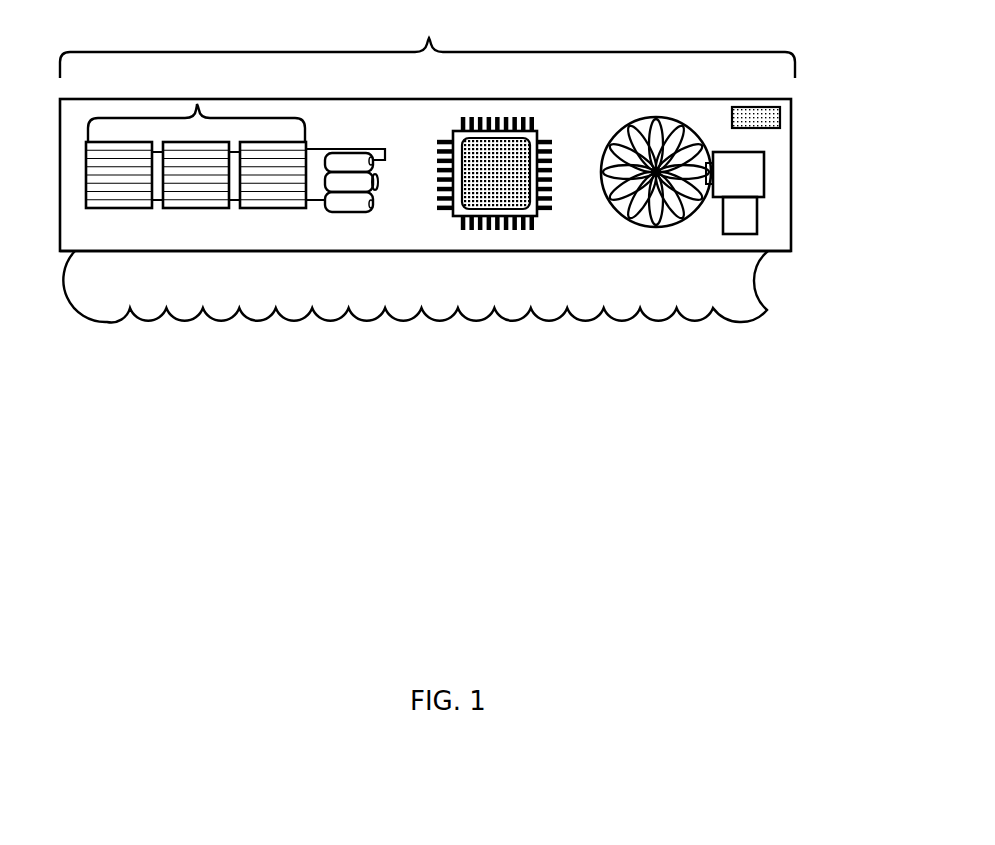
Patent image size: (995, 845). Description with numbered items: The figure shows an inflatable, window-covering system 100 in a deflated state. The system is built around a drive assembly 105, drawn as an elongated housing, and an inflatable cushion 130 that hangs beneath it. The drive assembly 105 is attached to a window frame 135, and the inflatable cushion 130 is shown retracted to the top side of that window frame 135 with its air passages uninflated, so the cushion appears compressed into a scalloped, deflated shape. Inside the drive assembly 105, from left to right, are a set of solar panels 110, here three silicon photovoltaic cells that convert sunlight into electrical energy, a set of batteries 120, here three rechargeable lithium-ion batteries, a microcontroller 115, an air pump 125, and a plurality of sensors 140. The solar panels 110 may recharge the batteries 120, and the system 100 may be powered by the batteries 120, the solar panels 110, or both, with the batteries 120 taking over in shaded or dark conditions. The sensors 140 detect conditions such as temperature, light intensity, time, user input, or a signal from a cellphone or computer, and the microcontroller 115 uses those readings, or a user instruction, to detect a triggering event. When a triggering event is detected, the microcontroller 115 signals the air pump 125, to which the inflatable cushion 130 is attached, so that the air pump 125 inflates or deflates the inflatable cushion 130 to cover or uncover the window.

The inflatable, window-covering system 100 is at (464, 344).
The drive assembly 105 is at (427, 130).
The set of solar panels 110 is at (196, 143).
The microcontroller 115 is at (519, 117).
The set of batteries 120 is at (373, 208).
The air pump 125 is at (764, 172).
The inflatable cushion 130 is at (767, 312).
The window frame 135 is at (793, 251).
The sensors 140 is at (784, 115).